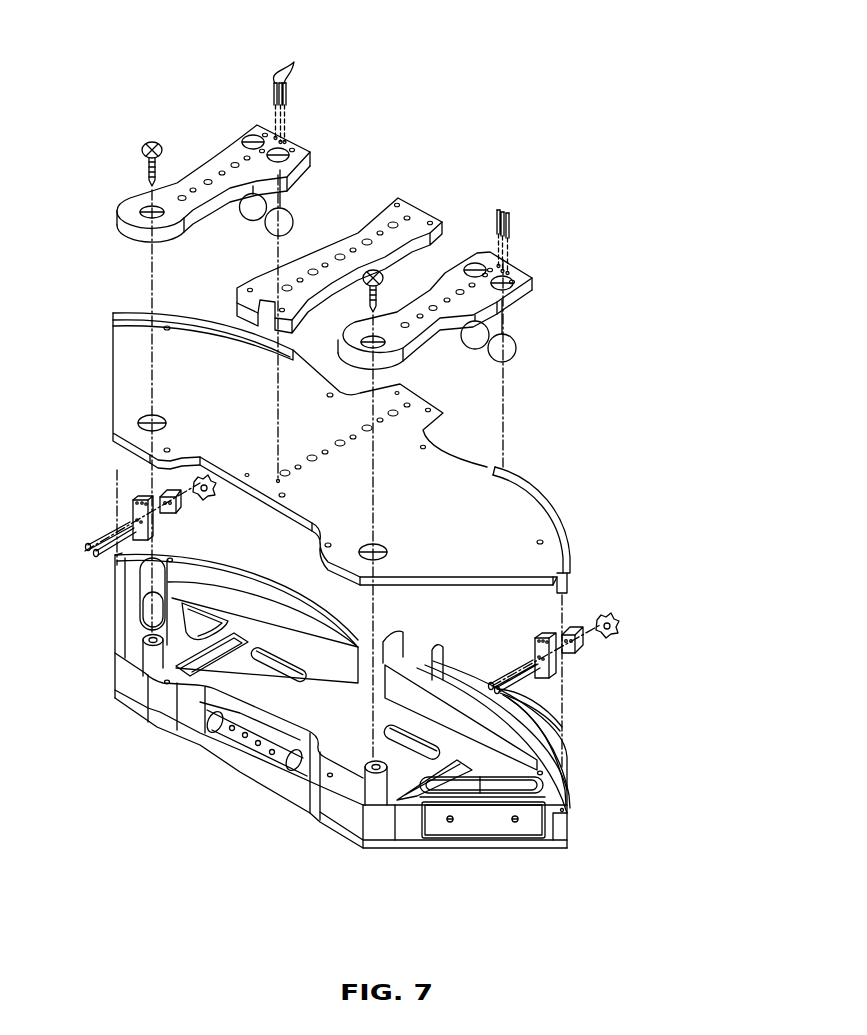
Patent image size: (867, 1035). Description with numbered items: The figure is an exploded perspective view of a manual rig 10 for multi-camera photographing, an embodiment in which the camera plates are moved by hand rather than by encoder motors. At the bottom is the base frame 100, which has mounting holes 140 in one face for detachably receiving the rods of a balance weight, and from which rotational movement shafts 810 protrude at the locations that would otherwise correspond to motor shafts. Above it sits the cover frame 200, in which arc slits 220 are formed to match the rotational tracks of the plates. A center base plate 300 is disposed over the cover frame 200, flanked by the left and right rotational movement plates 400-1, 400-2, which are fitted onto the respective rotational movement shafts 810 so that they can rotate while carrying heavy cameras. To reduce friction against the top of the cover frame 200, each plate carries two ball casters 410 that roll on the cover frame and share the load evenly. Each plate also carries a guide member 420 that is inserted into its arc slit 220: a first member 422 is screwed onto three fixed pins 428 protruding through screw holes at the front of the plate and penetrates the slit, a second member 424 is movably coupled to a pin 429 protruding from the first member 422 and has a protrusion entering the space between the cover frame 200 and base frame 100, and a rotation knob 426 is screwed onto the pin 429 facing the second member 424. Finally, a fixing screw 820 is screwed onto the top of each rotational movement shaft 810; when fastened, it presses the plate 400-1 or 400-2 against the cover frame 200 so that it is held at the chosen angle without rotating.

The rig for multi-camera photographing 10 is at (465, 100).
The base frame 100 is at (347, 820).
The mounting holes 140 is at (273, 773).
The cover frame 200 is at (508, 503).
The arc slits 220 is at (560, 530).
The center base plate 300 is at (417, 220).
The left rotational movement plate 400-1 is at (230, 153).
The right rotational movement plate 400-2 is at (520, 275).
The ball caster 410 is at (290, 217).
The guide member 420 is at (692, 614).
The first member 422 is at (547, 672).
The second member 424 is at (583, 648).
The rotation knob 426 is at (612, 613).
The fixed pins 428 is at (295, 91).
The pin 429 is at (556, 726).
The rotational movement shaft 810 is at (148, 652).
The fixing screw 820 is at (143, 148).